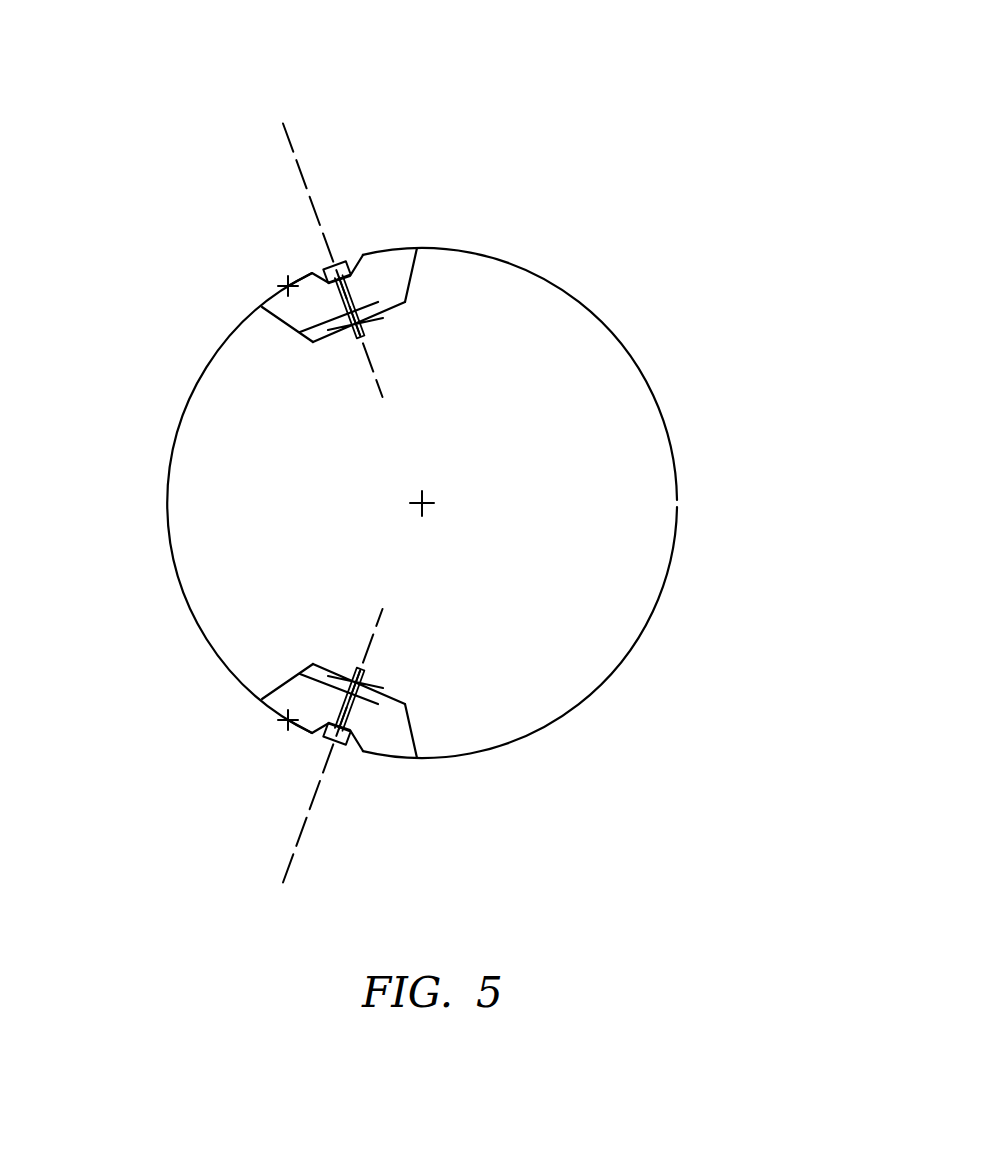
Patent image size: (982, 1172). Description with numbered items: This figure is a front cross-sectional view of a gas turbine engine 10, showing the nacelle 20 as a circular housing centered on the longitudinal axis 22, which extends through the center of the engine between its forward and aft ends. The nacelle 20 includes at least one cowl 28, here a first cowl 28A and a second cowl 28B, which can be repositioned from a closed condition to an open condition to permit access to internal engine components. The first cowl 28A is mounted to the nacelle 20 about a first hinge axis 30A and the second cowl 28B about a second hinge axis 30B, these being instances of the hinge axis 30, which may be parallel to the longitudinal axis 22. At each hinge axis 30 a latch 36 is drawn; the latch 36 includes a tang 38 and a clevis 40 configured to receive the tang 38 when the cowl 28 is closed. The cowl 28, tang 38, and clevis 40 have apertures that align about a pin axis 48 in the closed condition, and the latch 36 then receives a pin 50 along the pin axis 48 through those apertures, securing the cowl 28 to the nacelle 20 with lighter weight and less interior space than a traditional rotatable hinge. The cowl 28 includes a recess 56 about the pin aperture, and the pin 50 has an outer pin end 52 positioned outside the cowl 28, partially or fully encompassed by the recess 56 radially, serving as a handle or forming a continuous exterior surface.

The gas turbine engine 10 is at (600, 128).
The nacelle 20 is at (167, 493).
The longitudinal axis 22 is at (428, 494).
The cowl 28 is at (620, 310).
The first cowl 28A is at (572, 288).
The second cowl 28B is at (597, 692).
The hinge axis 30 is at (240, 282).
The first hinge axis 30A is at (283, 284).
The second hinge axis 30B is at (281, 727).
The latch 36 is at (367, 231).
The tang 38 is at (411, 284).
The clevis 40 is at (268, 312).
The pin axis 48 is at (285, 123).
The pin 50 is at (354, 292).
The outer pin end 52 is at (342, 258).
The recess 56 is at (306, 250).